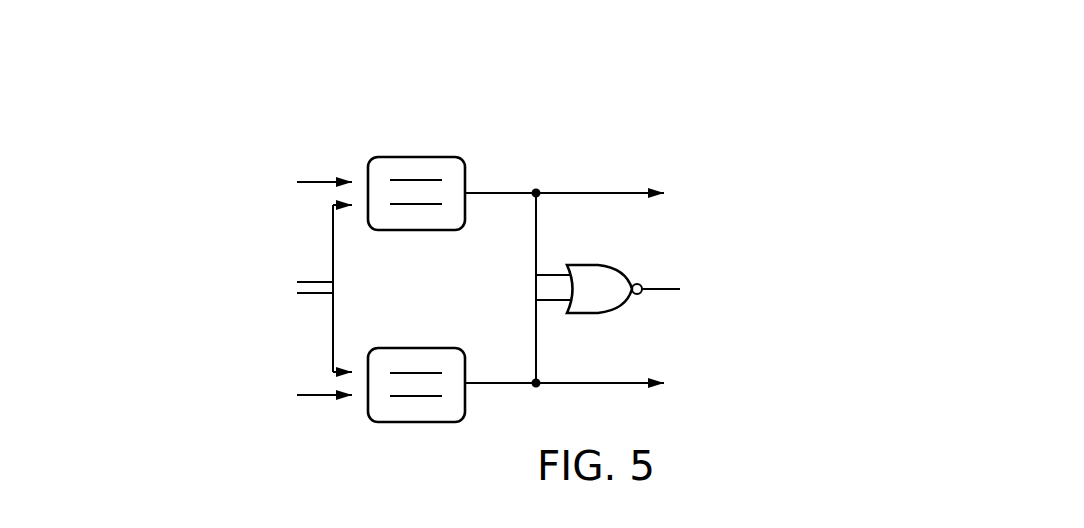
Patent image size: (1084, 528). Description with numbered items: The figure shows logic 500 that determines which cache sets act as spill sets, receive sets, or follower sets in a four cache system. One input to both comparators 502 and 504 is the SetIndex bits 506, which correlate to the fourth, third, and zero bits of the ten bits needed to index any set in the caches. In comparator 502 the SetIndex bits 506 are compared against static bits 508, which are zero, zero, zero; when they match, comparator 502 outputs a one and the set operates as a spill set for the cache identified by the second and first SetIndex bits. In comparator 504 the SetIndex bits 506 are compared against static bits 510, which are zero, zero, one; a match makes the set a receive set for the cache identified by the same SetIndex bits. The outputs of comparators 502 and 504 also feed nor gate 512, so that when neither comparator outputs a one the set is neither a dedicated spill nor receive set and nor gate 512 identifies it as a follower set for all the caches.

The logic 500 is at (300, 104).
The comparator 502 is at (417, 157).
The comparator 504 is at (417, 422).
The SetIndex [4,3,0] bits 506 is at (142, 285).
The static bits 508 is at (238, 180).
The static bits 510 is at (237, 395).
The nor gate 512 is at (605, 263).